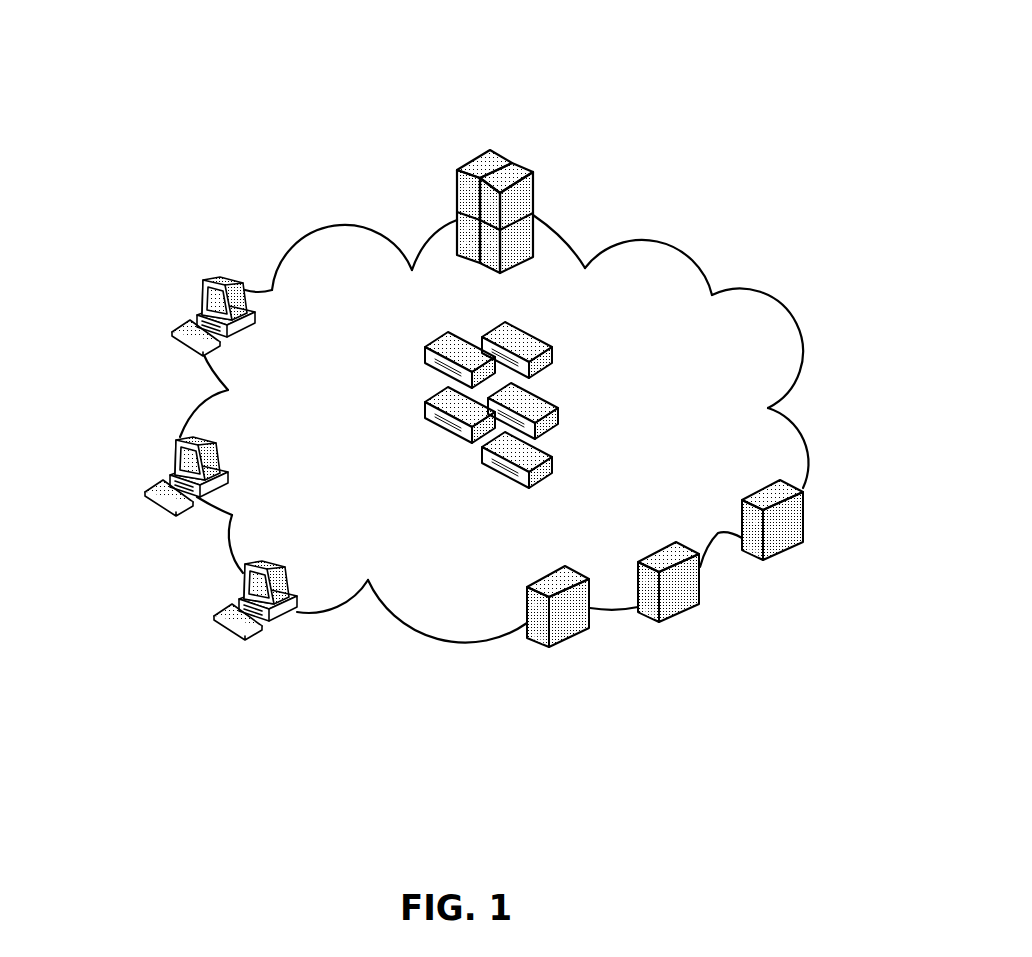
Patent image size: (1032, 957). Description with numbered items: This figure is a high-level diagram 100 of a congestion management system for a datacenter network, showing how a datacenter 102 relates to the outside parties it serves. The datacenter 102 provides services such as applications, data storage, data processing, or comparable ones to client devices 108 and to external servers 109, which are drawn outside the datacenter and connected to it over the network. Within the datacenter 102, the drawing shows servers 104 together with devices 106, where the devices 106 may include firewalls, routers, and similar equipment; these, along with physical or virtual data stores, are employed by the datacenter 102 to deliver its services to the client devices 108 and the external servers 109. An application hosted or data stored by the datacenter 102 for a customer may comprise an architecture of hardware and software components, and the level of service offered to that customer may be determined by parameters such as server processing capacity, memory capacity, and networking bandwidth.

The diagram 100 is at (713, 80).
The datacenter 102 is at (398, 510).
The servers 104 is at (507, 145).
The devices 106 is at (558, 350).
The client devices 108 is at (227, 605).
The external servers 109 is at (593, 630).